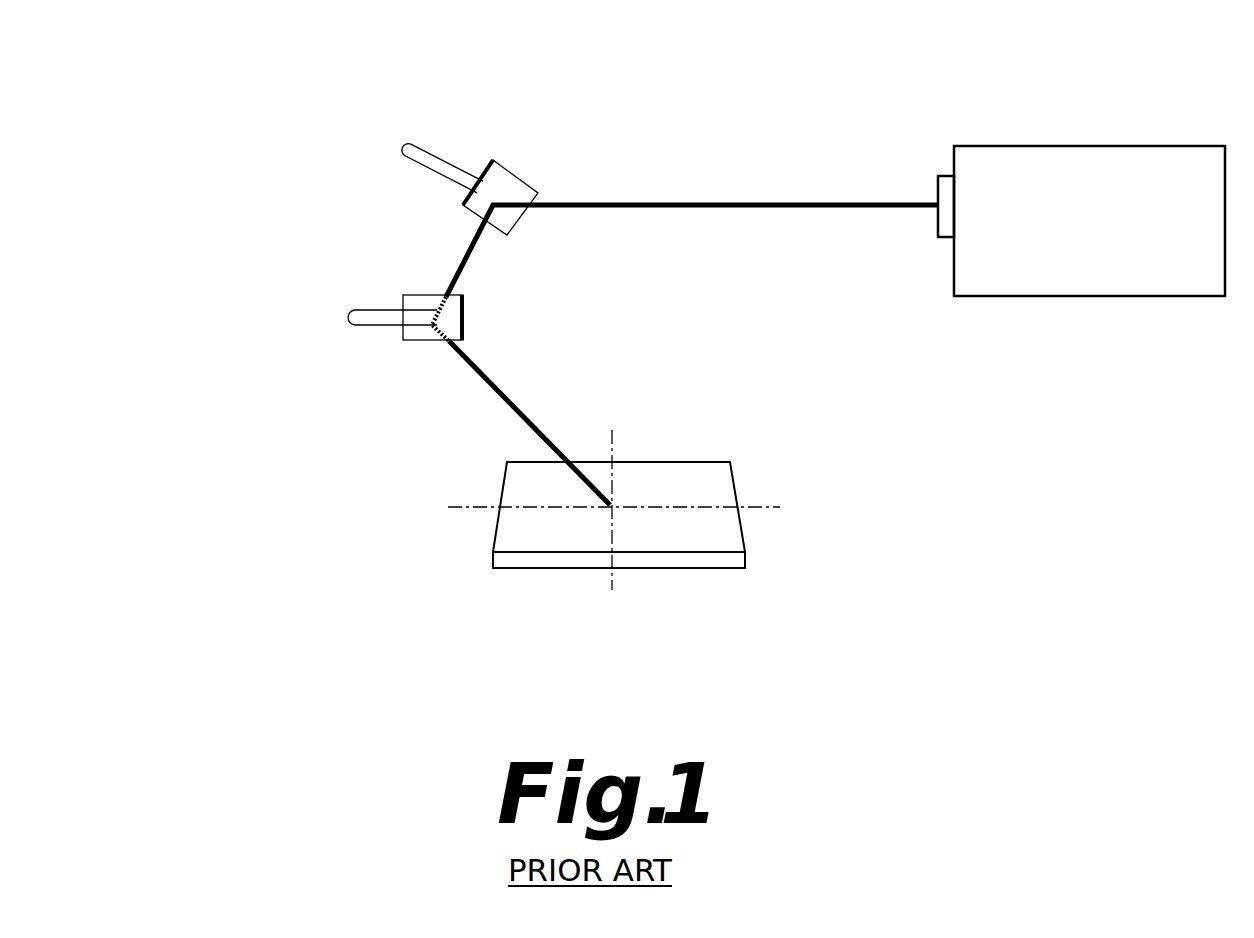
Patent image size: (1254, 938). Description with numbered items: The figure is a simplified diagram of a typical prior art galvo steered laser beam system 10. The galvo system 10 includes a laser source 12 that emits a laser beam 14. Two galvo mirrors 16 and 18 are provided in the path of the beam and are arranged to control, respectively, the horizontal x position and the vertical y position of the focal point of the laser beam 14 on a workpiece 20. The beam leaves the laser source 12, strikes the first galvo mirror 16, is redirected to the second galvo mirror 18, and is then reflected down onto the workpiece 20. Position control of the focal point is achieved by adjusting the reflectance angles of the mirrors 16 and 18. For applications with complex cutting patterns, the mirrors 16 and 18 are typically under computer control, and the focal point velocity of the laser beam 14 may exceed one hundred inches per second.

The galvo steered laser beam system 10 is at (224, 155).
The laser source 12 is at (1081, 287).
The laser beam 14 is at (692, 283).
The galvo mirror 16 is at (463, 124).
The galvo mirror 18 is at (477, 333).
The workpiece 20 is at (623, 460).